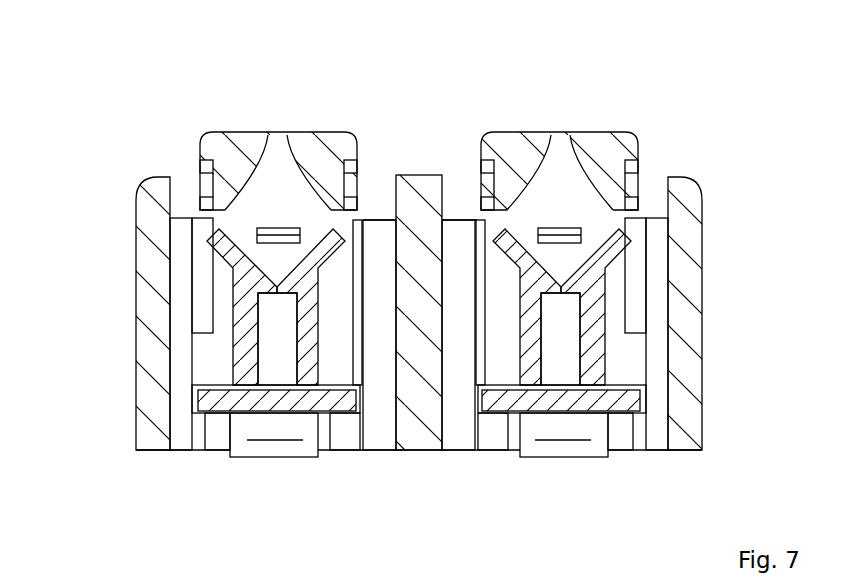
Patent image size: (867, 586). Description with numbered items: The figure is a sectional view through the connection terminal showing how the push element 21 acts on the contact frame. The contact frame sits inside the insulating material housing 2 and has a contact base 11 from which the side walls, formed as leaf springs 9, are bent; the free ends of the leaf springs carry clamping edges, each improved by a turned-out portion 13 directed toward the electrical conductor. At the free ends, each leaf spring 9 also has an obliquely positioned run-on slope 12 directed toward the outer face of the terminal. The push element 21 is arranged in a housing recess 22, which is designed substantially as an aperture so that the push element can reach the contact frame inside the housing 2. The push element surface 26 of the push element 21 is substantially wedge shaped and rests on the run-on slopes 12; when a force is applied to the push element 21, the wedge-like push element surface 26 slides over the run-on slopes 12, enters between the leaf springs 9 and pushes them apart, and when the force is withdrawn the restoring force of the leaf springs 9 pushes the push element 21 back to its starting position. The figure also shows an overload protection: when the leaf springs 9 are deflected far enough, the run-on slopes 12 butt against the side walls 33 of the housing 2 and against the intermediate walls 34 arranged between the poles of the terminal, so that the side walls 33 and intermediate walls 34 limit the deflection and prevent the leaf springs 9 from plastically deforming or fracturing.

The insulating material housing 2 is at (687, 423).
The leaf springs 9 is at (248, 322).
The contact base 11 is at (262, 400).
The run-on slope 12 is at (207, 242).
The turned-out portion 13 is at (278, 345).
The push element 21 is at (295, 133).
The housing recess 22 is at (375, 172).
The push element surface 26 is at (257, 130).
The side walls 33 is at (147, 343).
The intermediate walls 34 is at (415, 217).